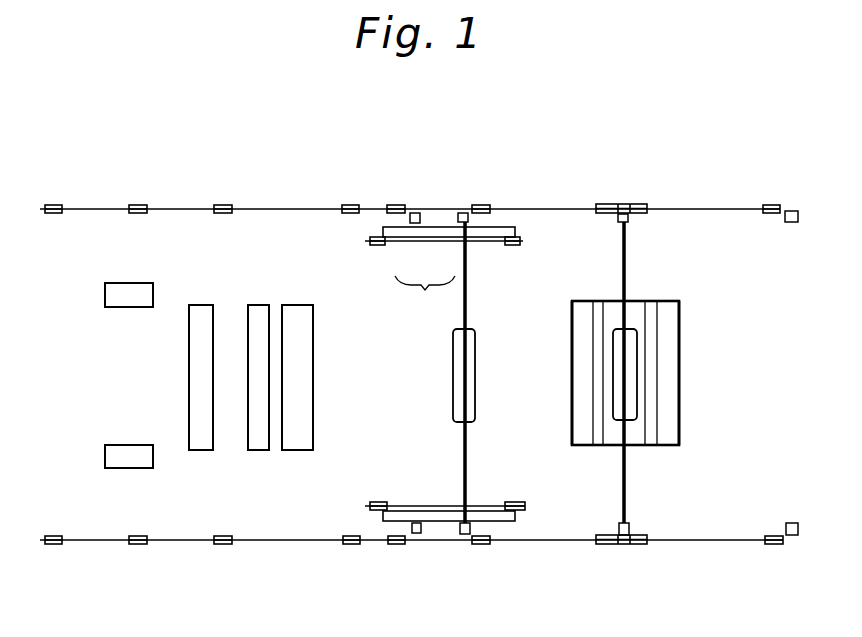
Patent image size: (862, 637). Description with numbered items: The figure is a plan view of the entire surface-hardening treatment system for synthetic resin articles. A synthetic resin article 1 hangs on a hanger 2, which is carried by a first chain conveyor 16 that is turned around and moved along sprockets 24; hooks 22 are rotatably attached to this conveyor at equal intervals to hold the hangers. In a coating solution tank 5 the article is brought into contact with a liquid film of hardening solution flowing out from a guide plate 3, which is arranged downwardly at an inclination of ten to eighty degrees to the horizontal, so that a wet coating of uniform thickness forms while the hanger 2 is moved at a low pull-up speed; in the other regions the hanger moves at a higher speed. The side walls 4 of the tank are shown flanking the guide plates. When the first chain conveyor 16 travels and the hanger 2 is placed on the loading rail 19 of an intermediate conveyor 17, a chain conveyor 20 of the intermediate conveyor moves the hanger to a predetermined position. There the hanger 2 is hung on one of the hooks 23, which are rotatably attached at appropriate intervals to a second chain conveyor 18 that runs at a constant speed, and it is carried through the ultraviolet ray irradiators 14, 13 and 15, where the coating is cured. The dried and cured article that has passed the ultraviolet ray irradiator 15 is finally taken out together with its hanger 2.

The synthetic resin article 1 is at (475, 378).
The hanger 2 is at (467, 452).
The guide plate 3 is at (598, 308).
The side walls of housing 4 is at (572, 372).
The coating solution tank 5 is at (636, 446).
The ultraviolet ray irradiator 13 is at (201, 450).
The ultraviolet ray irradiator 14 is at (298, 304).
The ultraviolet ray irradiator 15 is at (127, 307).
The first chain conveyor 16 is at (703, 206).
The intermediate conveyor 17 is at (425, 301).
The second chain conveyor 18 is at (284, 207).
The loading rail 19 is at (395, 242).
The chain conveyor 20 is at (426, 244).
The hooks 22 is at (470, 216).
The hooks 23 is at (419, 212).
The sprockets 24 is at (778, 205).